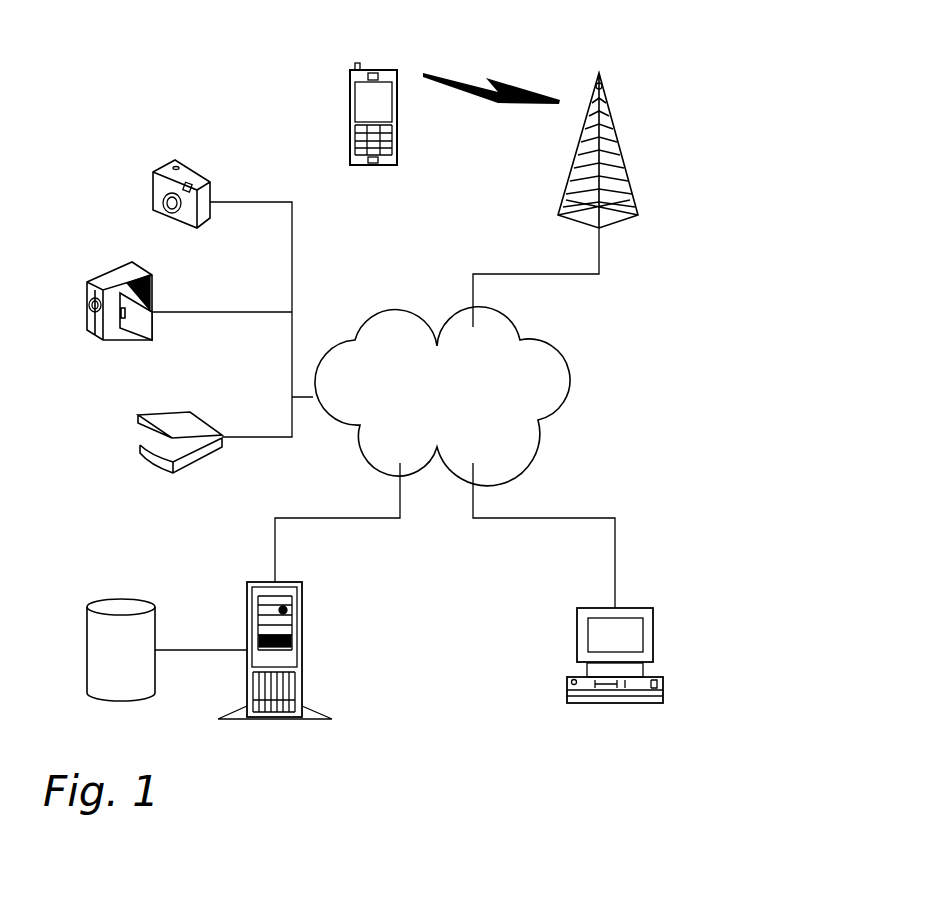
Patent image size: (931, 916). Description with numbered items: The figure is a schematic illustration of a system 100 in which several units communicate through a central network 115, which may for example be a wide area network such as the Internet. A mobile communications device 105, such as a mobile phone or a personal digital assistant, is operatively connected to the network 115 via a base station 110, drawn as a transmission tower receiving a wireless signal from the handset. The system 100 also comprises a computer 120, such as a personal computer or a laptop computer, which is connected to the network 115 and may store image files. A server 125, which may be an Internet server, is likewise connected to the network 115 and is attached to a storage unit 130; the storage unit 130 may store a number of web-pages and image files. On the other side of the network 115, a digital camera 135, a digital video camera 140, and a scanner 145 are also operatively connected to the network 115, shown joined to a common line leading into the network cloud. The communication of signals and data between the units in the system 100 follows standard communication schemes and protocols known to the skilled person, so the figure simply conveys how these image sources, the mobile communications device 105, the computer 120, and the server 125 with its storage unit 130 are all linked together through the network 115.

The system 100 is at (157, 43).
The mobile communications device 105 is at (375, 165).
The base station 110 is at (607, 148).
The network 115 is at (562, 395).
The computer 120 is at (663, 687).
The server 125 is at (245, 598).
The storage unit 130 is at (105, 608).
The digital camera 135 is at (153, 190).
The digital video camera 140 is at (90, 278).
The scanner 145 is at (140, 445).